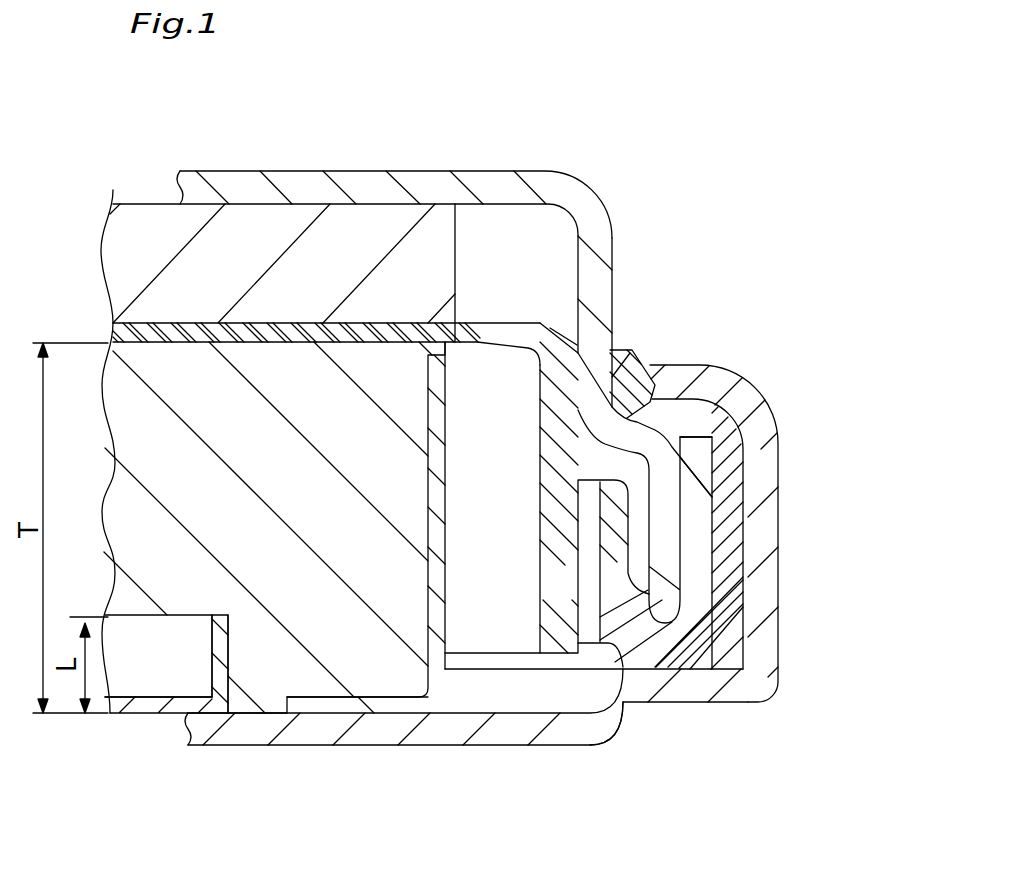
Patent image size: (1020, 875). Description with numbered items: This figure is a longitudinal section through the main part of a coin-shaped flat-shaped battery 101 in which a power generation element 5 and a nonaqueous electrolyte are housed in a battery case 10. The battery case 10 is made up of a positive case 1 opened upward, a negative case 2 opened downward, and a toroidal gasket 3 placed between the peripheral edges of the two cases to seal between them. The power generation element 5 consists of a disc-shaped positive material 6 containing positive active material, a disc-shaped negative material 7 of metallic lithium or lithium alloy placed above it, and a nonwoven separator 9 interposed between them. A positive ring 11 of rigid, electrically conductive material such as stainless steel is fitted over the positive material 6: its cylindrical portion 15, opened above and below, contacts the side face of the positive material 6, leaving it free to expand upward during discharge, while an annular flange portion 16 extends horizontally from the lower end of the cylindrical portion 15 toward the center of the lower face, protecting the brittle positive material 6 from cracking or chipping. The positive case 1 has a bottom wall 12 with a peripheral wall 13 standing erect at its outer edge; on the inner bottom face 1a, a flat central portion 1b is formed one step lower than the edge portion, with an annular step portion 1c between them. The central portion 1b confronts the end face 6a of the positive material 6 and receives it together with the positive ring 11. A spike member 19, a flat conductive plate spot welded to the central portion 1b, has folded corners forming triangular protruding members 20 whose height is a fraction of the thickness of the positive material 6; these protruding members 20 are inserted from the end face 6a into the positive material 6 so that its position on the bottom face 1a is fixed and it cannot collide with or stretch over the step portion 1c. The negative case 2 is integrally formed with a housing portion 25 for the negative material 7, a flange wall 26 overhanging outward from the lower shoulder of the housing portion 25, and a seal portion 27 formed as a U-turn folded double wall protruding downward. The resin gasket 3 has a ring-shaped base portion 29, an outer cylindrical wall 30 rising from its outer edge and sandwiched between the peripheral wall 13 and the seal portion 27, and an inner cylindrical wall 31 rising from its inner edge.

The flat-shaped battery 101 is at (612, 130).
The battery case 10 is at (620, 178).
The negative case 2 is at (276, 163).
The housing portion 25 is at (410, 170).
The negative material 7 is at (440, 237).
The separator 9 is at (410, 393).
The positive material 6 is at (472, 345).
The power generation element 5 is at (528, 214).
The positive case 1 is at (310, 760).
The positive ring 11 is at (458, 455).
The cylindrical portion 15 is at (445, 506).
The protruding members 20 is at (228, 644).
The end face 6a is at (260, 718).
The spike member 19 is at (162, 718).
The annular flange portion 16 is at (377, 715).
The bottom wall 12 is at (512, 748).
The central portion 1b is at (483, 700).
The annular step portion 1c is at (612, 708).
The bottom face 1a is at (728, 652).
The gasket 3 is at (745, 592).
The peripheral wall 13 is at (765, 528).
The flange wall 26 is at (637, 350).
The seal portion 27 is at (700, 450).
The outer cylindrical wall 30 is at (730, 472).
The inner cylindrical wall 31 is at (600, 486).
The base portion 29 is at (655, 670).